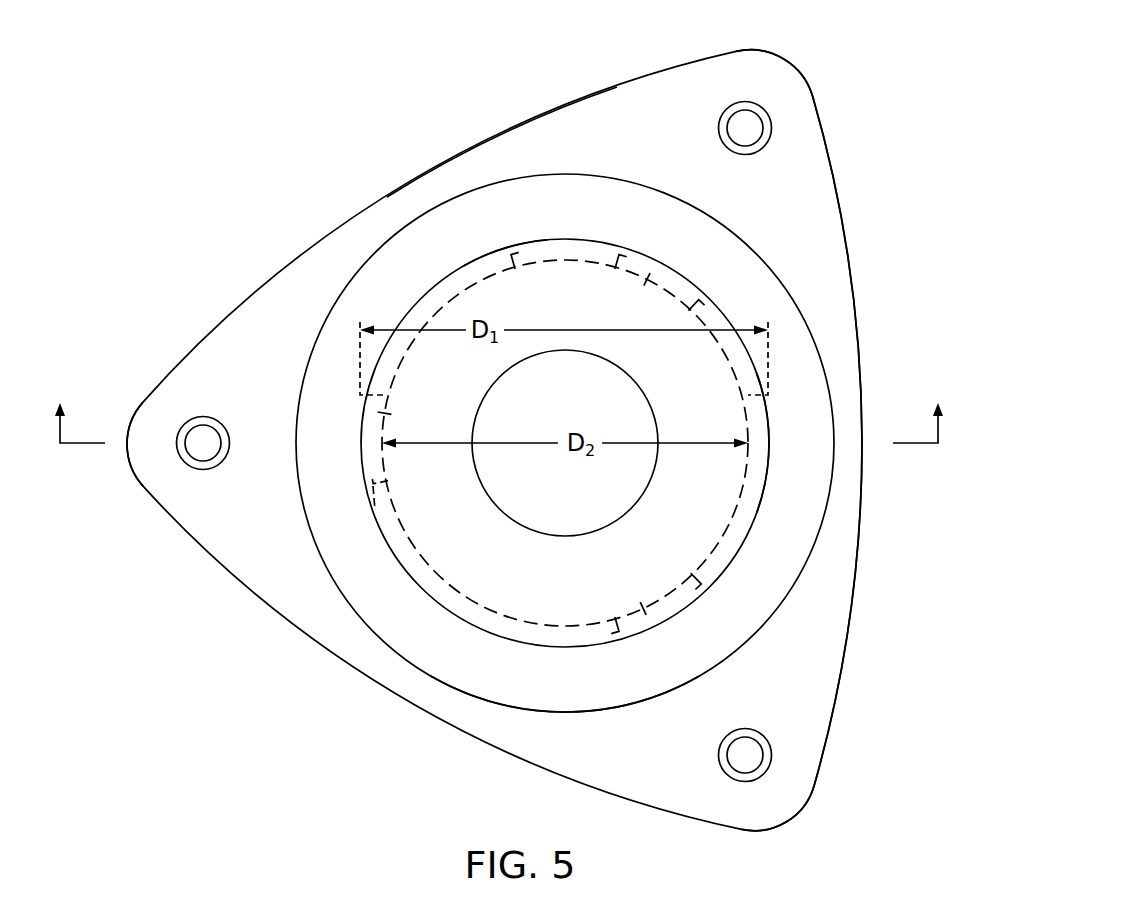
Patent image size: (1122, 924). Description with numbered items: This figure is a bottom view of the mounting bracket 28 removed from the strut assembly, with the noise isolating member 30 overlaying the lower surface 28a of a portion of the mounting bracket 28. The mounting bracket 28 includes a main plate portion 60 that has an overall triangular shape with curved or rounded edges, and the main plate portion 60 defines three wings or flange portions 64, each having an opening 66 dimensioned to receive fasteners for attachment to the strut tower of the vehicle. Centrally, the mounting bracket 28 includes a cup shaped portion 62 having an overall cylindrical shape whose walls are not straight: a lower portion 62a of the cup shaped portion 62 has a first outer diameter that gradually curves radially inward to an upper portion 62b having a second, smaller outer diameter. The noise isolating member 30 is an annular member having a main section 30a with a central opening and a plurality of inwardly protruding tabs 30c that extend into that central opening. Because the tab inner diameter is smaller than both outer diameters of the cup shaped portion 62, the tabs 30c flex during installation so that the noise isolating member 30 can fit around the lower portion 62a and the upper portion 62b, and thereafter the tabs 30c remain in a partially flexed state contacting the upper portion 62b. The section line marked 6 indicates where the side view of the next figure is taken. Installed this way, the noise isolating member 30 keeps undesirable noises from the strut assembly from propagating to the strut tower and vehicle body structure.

The mounting bracket 28 is at (260, 282).
The lower surface of the mounting bracket 28a is at (655, 115).
The flange portions 64 is at (765, 82).
The opening 66 is at (742, 146).
The main plate portion 60 is at (812, 637).
The noise isolating member 30 is at (673, 657).
The main section 30a is at (588, 683).
The tabs 30c is at (644, 282).
The cup shaped portion 62 is at (748, 536).
The lower portion of the cup shaped portion 62a is at (768, 470).
The upper portion of the cup shaped portion 62b is at (502, 249).
The section line 6- 6 is at (499, 407).